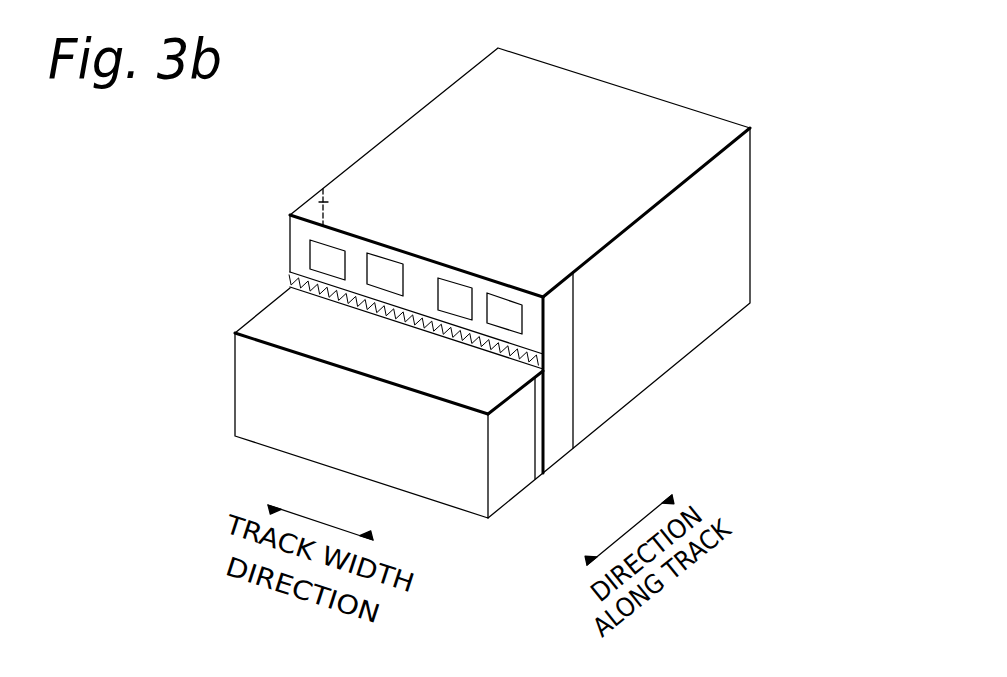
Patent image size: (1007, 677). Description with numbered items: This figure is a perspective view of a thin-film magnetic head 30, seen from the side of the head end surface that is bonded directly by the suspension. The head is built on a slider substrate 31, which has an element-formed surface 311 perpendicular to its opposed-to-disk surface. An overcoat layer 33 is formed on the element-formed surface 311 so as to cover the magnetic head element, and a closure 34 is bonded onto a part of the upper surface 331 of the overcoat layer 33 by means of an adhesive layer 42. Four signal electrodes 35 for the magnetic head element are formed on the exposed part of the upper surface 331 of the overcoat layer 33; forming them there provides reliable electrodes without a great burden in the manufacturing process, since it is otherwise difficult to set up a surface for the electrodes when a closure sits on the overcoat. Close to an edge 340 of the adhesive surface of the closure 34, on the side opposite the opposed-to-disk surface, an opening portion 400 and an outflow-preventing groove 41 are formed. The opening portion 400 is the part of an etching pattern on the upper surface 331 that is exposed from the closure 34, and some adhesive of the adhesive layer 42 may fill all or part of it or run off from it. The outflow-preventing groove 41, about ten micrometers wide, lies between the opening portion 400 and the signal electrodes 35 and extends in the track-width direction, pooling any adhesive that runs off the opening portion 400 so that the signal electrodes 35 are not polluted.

The thin-film magnetic head 30 is at (366, 128).
The slider substrate 31 is at (677, 345).
The element-formed surface 311 is at (318, 204).
The overcoat layer 33 is at (562, 448).
The upper surface of the overcoat layer 331 is at (304, 229).
The closure 34 is at (508, 490).
The signal electrodes 35 is at (333, 253).
The edge 340 is at (378, 329).
The opening portion 400 is at (300, 278).
The outflow-preventing groove 41 is at (547, 360).
The adhesive layer 42 is at (541, 477).